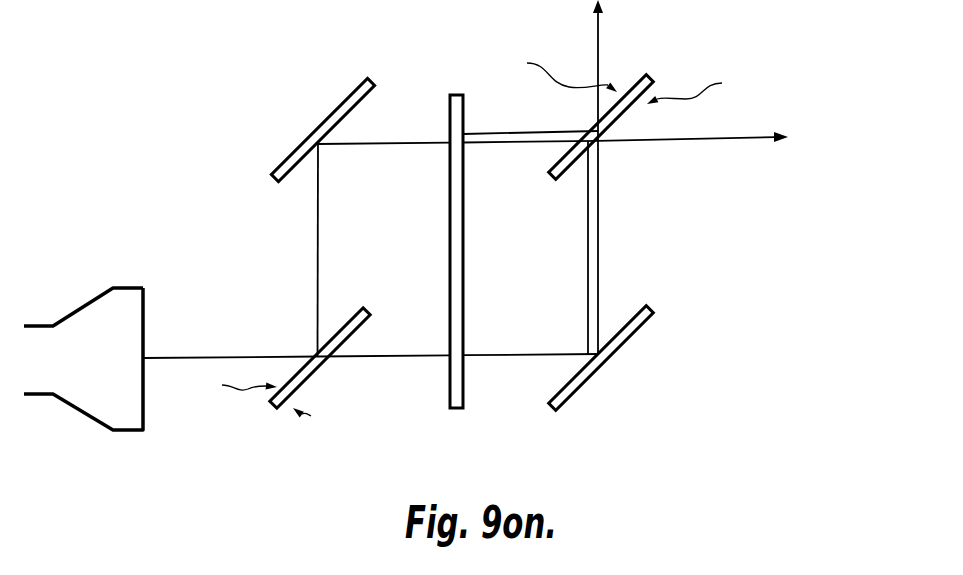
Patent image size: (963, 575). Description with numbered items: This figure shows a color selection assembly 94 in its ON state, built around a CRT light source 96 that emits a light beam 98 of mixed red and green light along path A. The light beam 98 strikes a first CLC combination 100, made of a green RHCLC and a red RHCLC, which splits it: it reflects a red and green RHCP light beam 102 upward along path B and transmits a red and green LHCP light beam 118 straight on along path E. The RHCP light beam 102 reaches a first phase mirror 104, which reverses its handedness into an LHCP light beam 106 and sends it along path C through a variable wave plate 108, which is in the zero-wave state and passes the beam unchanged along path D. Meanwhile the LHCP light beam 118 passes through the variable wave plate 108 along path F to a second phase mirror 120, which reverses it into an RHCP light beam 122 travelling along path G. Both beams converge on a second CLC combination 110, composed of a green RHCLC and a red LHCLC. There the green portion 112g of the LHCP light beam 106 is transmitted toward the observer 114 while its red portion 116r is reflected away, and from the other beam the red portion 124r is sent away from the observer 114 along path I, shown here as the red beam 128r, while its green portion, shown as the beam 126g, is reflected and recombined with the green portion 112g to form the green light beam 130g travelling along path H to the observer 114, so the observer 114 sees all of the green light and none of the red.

The color selection assembly 94 is at (259, 84).
The light source 96 is at (125, 288).
The light beam 98 is at (228, 357).
The first CLC combination 100 is at (320, 372).
The RHCP light beam 102 is at (318, 212).
The first phase mirror 104 is at (352, 88).
The LHCP light beam 106 is at (433, 143).
The variable wave plate 108 is at (465, 233).
The second CLC combination 110 is at (655, 81).
The green portion of the LHCP light beam 112g is at (480, 143).
The observer 114 is at (840, 134).
The red portion of the LHCP light beam 116r is at (530, 115).
The LHCP light beam 118 is at (438, 352).
The second phase mirror 120 is at (633, 334).
The RHCP light beam 122 is at (615, 265).
The red portion of the RHCP light beam 124r is at (588, 200).
The green light beam 126g is at (598, 193).
The red light beam to I 128r is at (598, 25).
The green light beam 130g is at (660, 138).